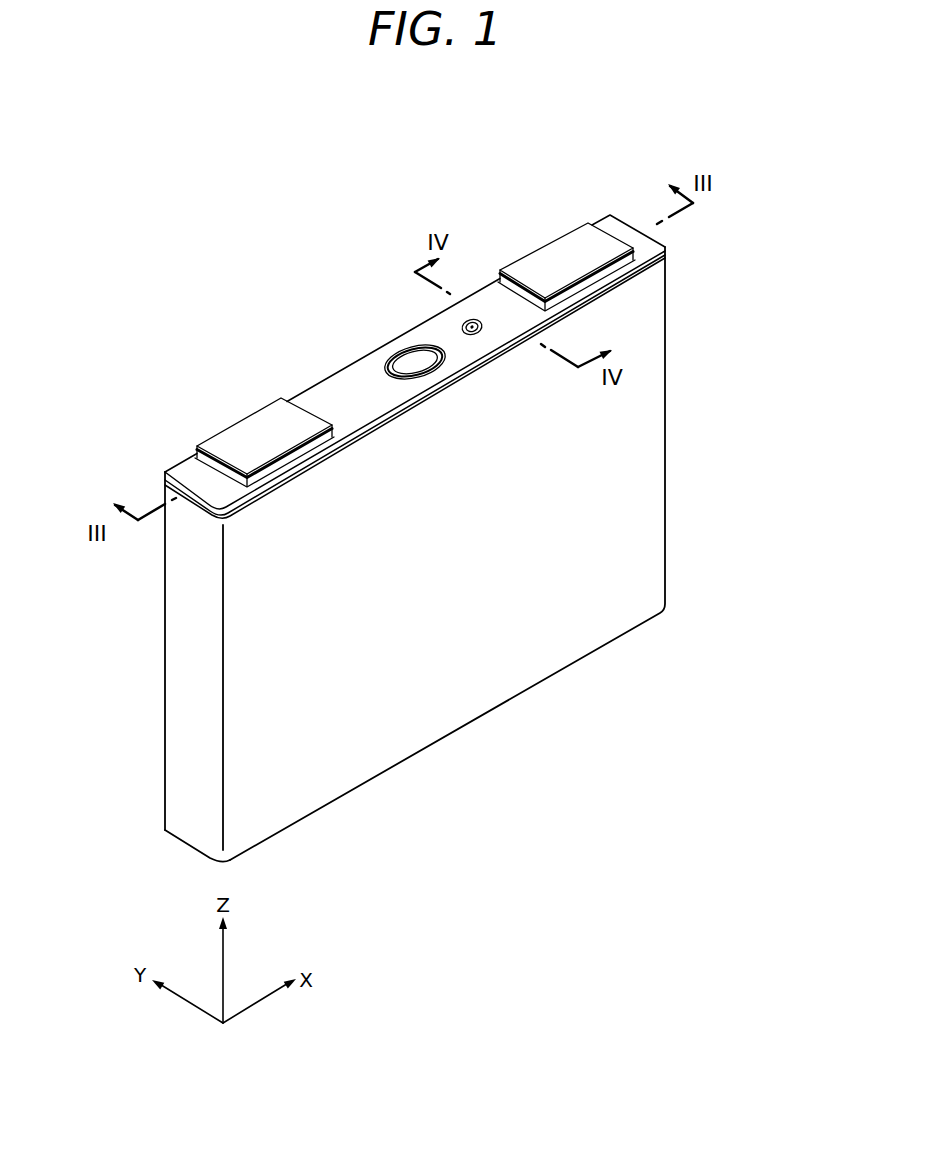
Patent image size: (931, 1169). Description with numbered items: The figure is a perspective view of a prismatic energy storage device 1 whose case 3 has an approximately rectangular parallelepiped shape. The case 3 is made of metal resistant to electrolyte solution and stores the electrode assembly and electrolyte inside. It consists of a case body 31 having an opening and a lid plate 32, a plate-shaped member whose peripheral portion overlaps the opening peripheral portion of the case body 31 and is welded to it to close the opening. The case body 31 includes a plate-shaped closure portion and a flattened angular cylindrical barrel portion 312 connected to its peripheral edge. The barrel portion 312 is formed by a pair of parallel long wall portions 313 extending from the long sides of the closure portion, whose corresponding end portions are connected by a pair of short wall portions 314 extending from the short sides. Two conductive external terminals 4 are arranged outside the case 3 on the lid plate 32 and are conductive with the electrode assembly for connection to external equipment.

The energy storage device 1 is at (661, 136).
The case 3 is at (768, 297).
The case body 31 is at (642, 407).
The lid plate 32 is at (655, 243).
The barrel portion 312 is at (182, 788).
The long wall portions 313 is at (322, 747).
The short wall portions 314 is at (195, 688).
The external terminals 4 is at (247, 450).